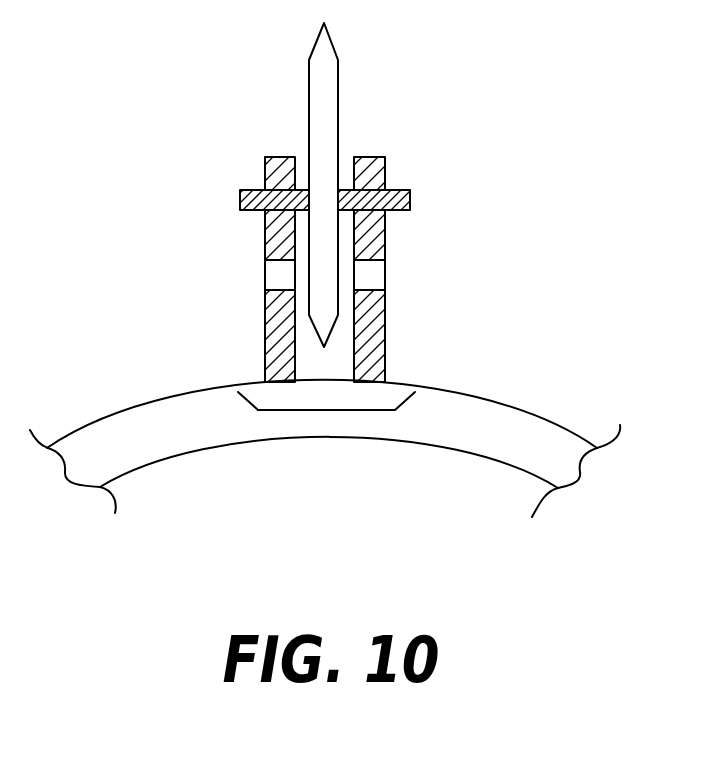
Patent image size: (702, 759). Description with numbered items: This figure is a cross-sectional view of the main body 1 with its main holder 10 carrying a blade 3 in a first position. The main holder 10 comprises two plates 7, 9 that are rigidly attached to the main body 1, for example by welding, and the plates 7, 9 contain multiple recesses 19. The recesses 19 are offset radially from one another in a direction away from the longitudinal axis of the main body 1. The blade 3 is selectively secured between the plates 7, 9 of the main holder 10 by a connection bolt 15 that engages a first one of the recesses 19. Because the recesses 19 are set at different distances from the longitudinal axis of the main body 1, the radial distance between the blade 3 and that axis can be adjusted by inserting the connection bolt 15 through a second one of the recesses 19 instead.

The main body 1 is at (515, 425).
The blade 3 is at (332, 95).
The plate 7 is at (385, 335).
The plate 9 is at (258, 340).
The main holder 10 is at (327, 412).
The connection bolt 15 is at (242, 193).
The recess 19 is at (385, 217).